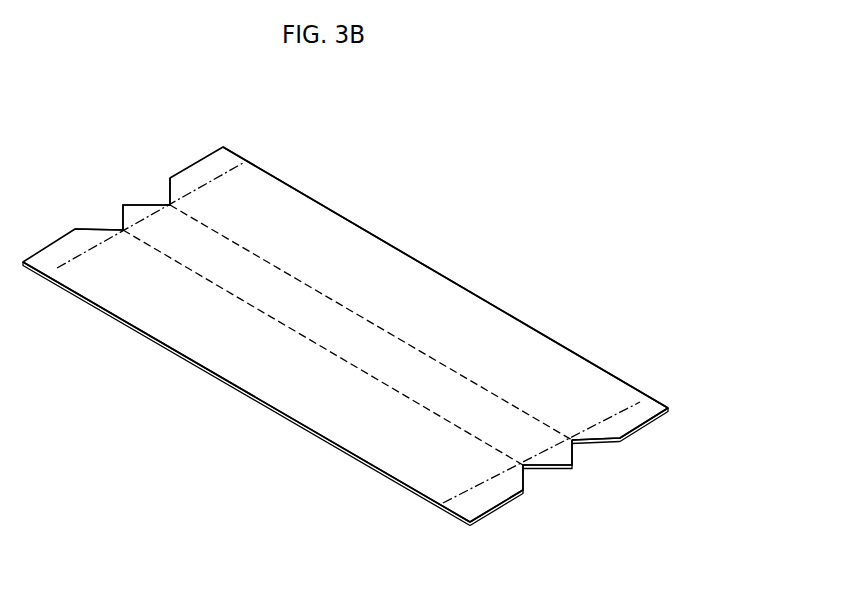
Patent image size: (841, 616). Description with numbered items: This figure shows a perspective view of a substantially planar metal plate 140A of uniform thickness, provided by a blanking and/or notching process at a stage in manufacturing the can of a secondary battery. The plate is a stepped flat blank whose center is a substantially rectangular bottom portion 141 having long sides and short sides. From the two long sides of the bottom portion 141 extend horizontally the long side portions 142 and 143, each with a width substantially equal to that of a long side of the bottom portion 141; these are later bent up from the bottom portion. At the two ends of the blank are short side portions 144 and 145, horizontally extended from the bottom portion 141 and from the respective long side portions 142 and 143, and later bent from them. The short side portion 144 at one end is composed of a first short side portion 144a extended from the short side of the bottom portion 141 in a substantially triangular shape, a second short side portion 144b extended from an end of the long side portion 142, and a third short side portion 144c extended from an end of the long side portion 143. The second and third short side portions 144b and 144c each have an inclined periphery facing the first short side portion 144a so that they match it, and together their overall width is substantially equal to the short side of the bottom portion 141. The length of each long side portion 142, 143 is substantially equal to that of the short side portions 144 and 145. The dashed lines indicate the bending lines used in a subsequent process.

The metal plate 140A is at (371, 349).
The bottom portion 141 is at (295, 298).
The long side portion 142 is at (262, 378).
The long side portion 143 is at (537, 352).
The short side portion 144 is at (581, 487).
The first short side portion 144a is at (558, 455).
The second short side portion 144b is at (500, 492).
The third short side portion 144c is at (622, 423).
The short side portion 145 is at (111, 191).